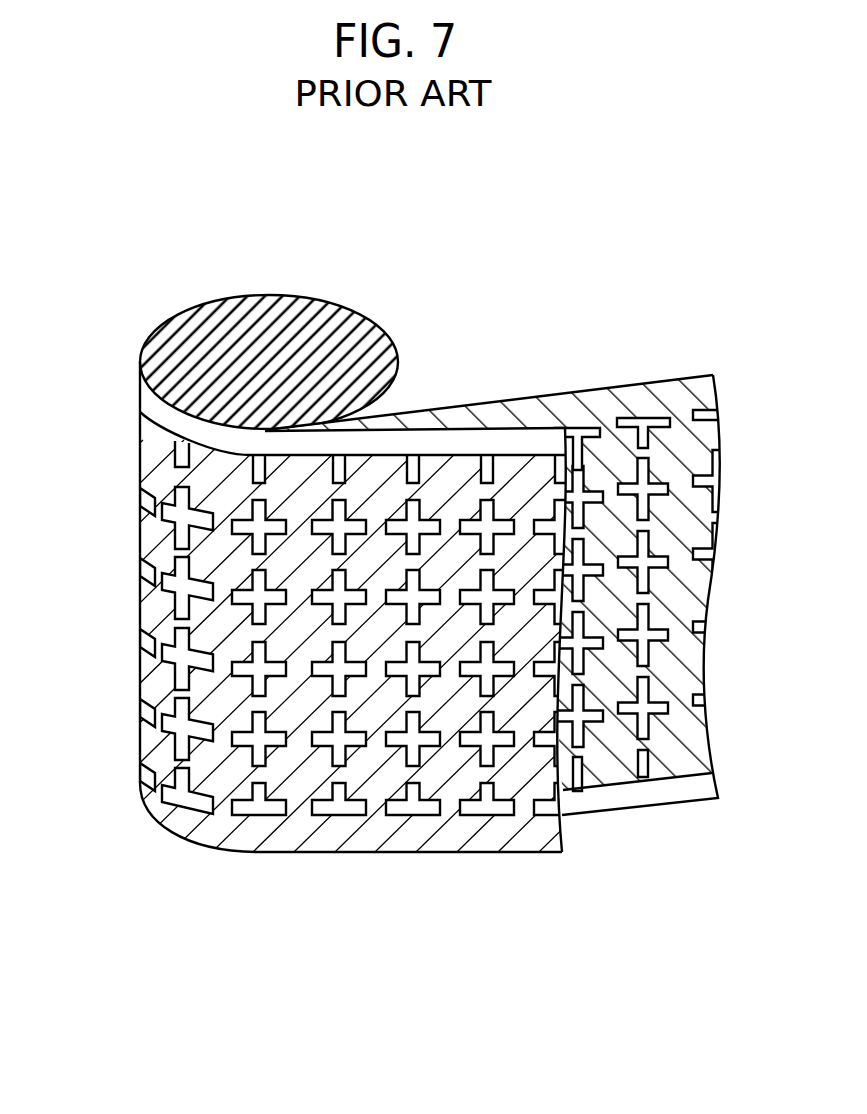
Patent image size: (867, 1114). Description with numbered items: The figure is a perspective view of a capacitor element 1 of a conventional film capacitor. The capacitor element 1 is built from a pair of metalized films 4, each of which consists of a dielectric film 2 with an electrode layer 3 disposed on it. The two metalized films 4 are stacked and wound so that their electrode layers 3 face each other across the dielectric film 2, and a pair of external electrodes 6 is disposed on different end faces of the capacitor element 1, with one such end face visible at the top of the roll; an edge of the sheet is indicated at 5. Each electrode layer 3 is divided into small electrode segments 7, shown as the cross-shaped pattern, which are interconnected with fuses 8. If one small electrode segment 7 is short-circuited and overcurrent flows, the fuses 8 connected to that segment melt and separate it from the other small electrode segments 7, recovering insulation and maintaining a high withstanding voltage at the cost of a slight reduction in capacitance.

The capacitor element 1 is at (388, 243).
The dielectric film 2 is at (155, 410).
The electrode layer 3 is at (433, 647).
The metalized film 4 is at (65, 357).
The sheet end portion 5 is at (400, 383).
The external electrode 6 is at (247, 333).
The small electrode segment 7 is at (147, 540).
The fuse 8 is at (183, 622).